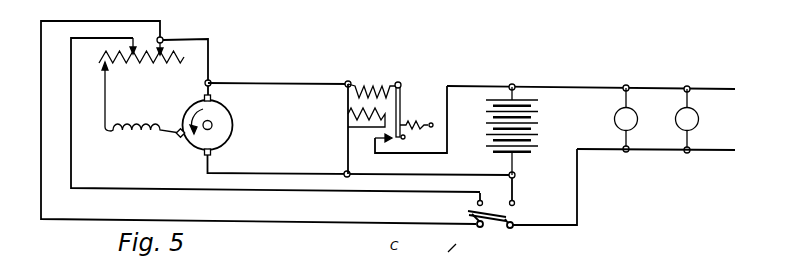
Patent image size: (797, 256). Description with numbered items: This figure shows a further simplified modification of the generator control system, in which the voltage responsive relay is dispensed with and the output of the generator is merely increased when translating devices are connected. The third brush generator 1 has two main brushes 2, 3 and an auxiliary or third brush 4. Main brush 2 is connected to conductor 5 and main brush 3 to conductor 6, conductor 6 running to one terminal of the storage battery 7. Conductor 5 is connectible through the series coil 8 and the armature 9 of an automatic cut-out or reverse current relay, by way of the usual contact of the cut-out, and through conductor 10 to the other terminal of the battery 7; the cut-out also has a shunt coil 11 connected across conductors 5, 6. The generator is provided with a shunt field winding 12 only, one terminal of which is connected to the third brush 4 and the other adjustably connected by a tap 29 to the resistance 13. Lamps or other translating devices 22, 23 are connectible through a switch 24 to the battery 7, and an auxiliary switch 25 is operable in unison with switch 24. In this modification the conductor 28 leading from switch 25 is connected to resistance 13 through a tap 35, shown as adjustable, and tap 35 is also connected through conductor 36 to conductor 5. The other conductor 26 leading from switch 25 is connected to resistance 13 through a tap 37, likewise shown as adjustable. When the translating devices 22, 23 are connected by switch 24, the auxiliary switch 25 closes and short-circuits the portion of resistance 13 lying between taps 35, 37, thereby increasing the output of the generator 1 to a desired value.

The third brush generator 1 is at (233, 131).
The main brush 2 is at (212, 100).
The main brush 3 is at (213, 152).
The third brush 4 is at (181, 137).
The conductor 5 is at (288, 82).
The conductor 6 is at (288, 172).
The storage battery 7 is at (485, 123).
The series coil 8 is at (374, 83).
The armature 9 is at (402, 98).
The conductor 10 is at (478, 86).
The shunt coil 11 is at (347, 113).
The shunt field winding 12 is at (137, 133).
The resistance 13 is at (146, 63).
The lamp 22 is at (615, 125).
The lamp 23 is at (706, 111).
The switch 24 is at (515, 206).
The auxiliary switch 25 is at (467, 212).
The conductor 26 is at (311, 191).
The conductor 28 is at (241, 221).
The tap 29 is at (106, 103).
The tap 35 is at (163, 38).
The conductor 36 is at (203, 38).
The tap 37 is at (134, 42).